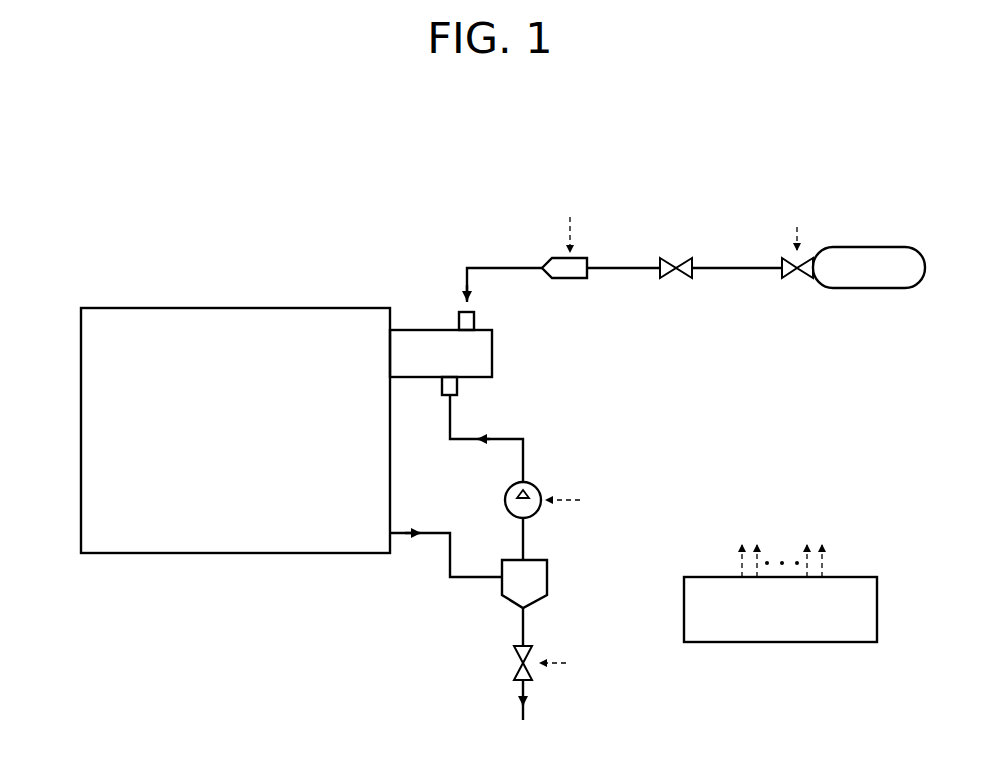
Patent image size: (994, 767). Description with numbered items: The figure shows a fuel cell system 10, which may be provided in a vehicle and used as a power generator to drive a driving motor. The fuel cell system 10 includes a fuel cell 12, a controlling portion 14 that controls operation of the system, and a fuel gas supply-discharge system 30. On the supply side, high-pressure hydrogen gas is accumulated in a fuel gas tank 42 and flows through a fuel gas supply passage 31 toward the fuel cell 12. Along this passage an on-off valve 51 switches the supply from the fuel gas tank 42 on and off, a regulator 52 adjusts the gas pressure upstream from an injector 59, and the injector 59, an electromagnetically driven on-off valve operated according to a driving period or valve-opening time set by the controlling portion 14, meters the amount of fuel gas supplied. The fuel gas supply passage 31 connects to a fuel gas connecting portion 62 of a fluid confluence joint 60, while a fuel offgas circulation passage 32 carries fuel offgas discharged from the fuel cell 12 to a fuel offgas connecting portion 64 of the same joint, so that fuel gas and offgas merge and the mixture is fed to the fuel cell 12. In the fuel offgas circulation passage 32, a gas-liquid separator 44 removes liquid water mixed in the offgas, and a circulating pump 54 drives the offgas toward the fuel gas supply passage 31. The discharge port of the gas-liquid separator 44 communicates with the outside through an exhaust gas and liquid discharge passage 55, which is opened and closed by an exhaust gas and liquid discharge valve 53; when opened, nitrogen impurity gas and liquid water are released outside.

The fuel cell system 10 is at (101, 183).
The fuel cell 12 is at (135, 307).
The controlling portion 14 is at (833, 576).
The fuel gas supply-discharge system 30 is at (622, 385).
The fuel gas supply passage 31 is at (623, 266).
The fuel offgas circulation passage 32 is at (448, 556).
The fuel gas tank 42 is at (868, 246).
The gas-liquid separator 44 is at (548, 577).
The on-off valve 51 is at (800, 279).
The regulator 52 is at (678, 279).
The exhaust gas and liquid discharge valve 53 is at (518, 664).
The circulating pump 54 is at (531, 486).
The exhaust gas and liquid discharge passage 55 is at (524, 627).
The injector 59 is at (565, 280).
The fluid confluence joint 60 is at (432, 322).
The fuel gas connecting portion 62 is at (475, 318).
The fuel offgas connecting portion 64 is at (442, 380).